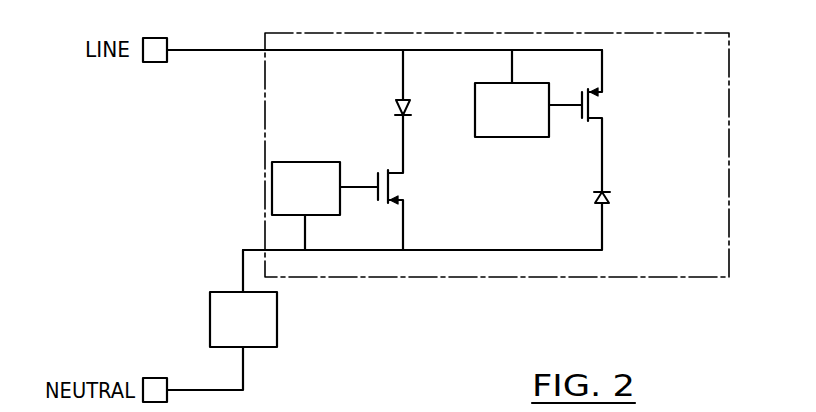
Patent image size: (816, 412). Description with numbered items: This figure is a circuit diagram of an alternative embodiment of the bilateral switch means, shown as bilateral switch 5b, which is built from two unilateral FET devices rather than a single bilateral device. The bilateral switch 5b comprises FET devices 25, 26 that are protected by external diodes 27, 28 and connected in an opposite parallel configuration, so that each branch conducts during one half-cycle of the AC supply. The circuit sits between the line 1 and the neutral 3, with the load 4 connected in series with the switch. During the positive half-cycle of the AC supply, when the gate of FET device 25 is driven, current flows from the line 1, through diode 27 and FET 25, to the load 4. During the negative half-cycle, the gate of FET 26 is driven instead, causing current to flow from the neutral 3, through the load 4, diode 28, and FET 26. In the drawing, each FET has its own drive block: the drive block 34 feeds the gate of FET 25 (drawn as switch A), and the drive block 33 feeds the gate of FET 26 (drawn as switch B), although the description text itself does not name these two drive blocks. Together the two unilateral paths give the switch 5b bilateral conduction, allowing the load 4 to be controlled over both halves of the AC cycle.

The line 1 is at (160, 38).
The neutral 3 is at (153, 378).
The load 4 is at (277, 335).
The bilateral switch 5b is at (265, 106).
The FET device 25 is at (398, 188).
The FET device 26 is at (600, 96).
The diode 27 is at (397, 100).
The diode 28 is at (609, 197).
The drive B 33 is at (549, 116).
The drive A 34 is at (305, 162).